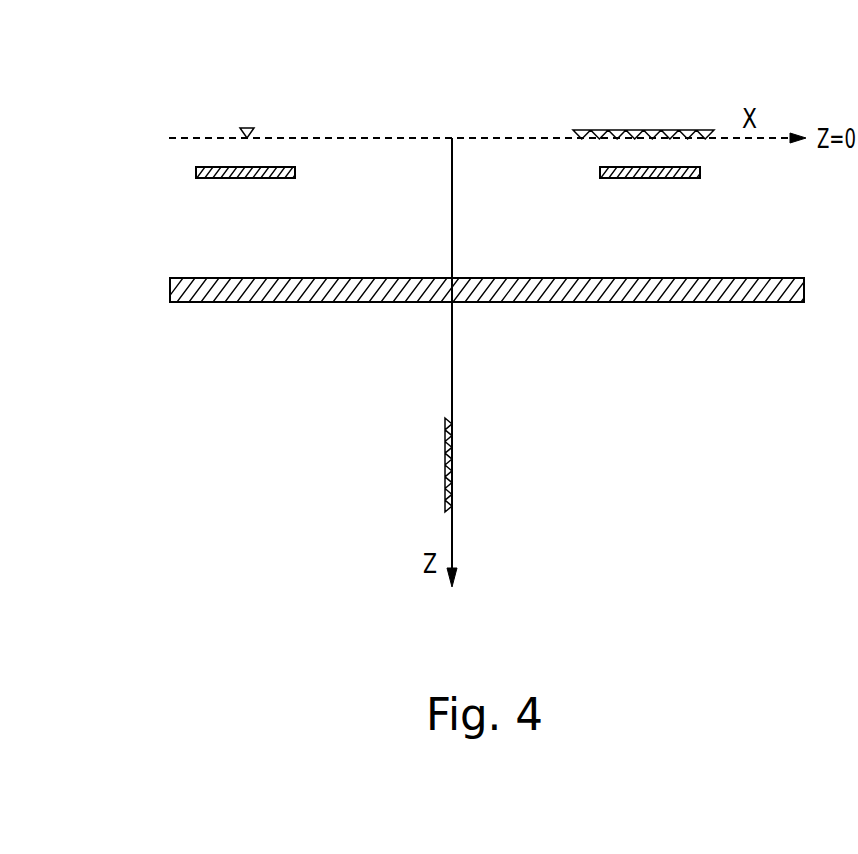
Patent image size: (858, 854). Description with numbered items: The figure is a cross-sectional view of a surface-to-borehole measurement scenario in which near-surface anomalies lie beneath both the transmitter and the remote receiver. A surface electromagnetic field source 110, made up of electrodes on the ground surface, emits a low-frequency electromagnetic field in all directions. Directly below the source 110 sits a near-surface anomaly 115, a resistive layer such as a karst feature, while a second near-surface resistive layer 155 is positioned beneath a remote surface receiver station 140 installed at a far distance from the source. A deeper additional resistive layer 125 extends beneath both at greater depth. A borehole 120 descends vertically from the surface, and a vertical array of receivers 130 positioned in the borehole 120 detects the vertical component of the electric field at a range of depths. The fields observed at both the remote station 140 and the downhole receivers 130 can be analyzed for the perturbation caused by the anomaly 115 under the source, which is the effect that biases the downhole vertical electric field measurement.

The surface electromagnetic field source 110 is at (613, 129).
The near-surface anomaly 115 is at (600, 172).
The borehole 120 is at (452, 322).
The additional resistive layer 125 is at (267, 277).
The vertical array of receivers 130 is at (443, 462).
The remote surface EM receiver station 140 is at (246, 128).
The near-surface resistive layer 155 is at (196, 172).